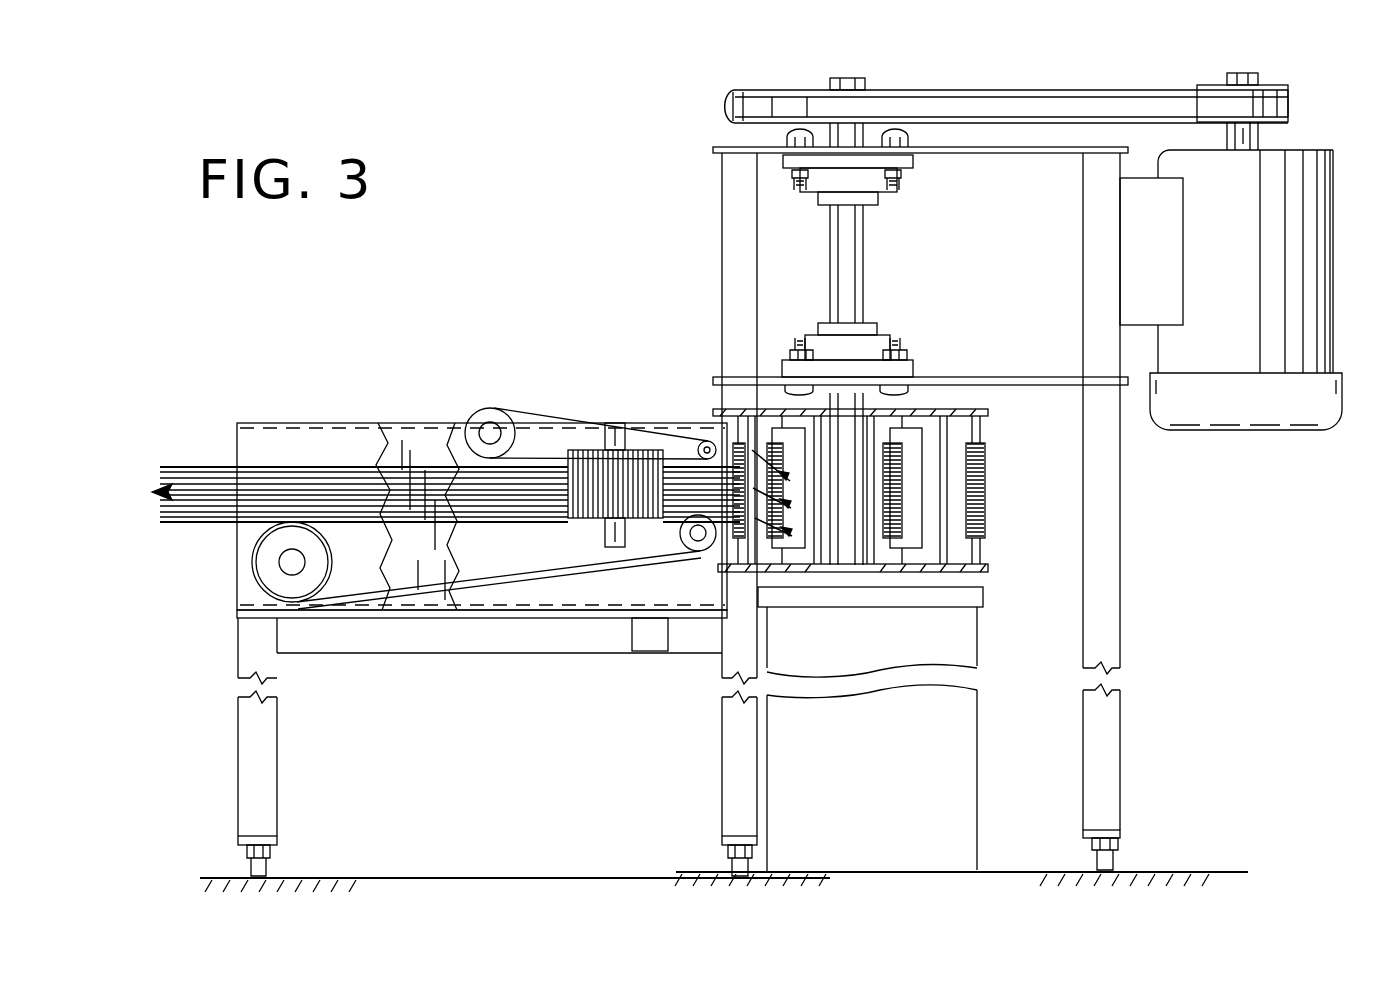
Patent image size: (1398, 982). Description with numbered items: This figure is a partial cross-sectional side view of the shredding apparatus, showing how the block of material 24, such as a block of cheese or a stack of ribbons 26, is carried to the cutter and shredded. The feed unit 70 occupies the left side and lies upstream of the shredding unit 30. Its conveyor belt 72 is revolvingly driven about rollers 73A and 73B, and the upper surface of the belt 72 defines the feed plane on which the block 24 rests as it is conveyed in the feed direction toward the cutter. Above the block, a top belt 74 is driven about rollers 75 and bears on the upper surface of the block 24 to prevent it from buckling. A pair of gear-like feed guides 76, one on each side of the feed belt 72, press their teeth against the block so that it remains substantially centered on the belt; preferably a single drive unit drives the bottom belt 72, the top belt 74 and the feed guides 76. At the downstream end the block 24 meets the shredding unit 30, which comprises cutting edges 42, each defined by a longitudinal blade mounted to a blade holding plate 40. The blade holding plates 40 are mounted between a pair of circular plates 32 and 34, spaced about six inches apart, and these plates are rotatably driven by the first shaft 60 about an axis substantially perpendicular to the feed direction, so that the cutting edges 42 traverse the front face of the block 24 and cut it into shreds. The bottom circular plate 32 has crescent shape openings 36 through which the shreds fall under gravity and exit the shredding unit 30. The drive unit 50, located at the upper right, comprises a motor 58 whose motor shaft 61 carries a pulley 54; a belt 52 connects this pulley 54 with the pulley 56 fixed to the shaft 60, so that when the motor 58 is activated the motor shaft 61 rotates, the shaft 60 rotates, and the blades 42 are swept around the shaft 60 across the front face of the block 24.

The block of material 24 is at (170, 465).
The stack of ribbons 26 is at (247, 468).
The shredding unit 30 is at (972, 415).
The bottom circular plate 32 is at (973, 571).
The circular plate 34 is at (970, 413).
The crescent shape openings 36 is at (933, 565).
The blade holding plate 40 is at (913, 545).
The cutting edge 42 is at (888, 488).
The drive unit 50 is at (1333, 240).
The belt 52 is at (1105, 104).
The pulley 54 is at (1278, 85).
The pulley 56 is at (748, 88).
The motor 58 is at (1290, 182).
The first shaft 60 is at (830, 82).
The motor shaft 61 is at (1243, 80).
The feed unit 70 is at (249, 593).
The conveyor belt 72 is at (533, 565).
The roller 73A is at (312, 558).
The roller 73B is at (700, 548).
The top belt 74 is at (524, 416).
The rollers 75 is at (490, 428).
The feed guide 76 is at (612, 440).